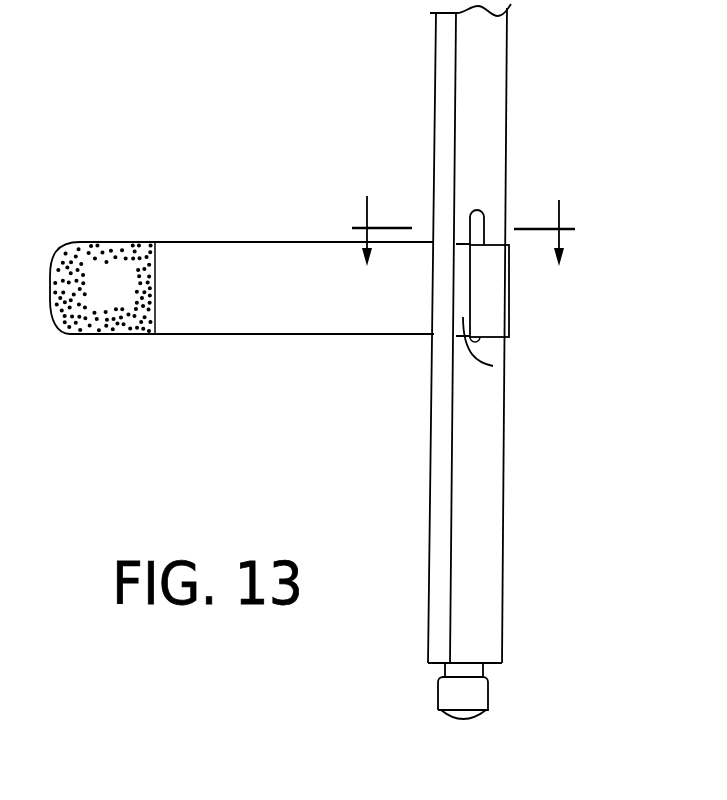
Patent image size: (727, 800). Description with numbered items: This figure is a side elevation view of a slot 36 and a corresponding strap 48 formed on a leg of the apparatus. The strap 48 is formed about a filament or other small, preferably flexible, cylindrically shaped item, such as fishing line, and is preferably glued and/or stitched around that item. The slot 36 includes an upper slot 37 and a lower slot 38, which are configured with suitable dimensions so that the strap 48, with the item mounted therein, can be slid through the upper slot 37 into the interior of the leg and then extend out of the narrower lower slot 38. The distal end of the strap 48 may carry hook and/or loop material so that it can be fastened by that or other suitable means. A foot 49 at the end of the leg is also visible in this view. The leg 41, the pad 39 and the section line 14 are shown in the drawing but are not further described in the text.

The section line 14- 14 is at (465, 223).
The cleaning tool assembly 36 is at (405, 362).
The retaining tab 37 is at (483, 215).
The clip 38 is at (493, 366).
The abrasive pad 39 is at (130, 304).
The shaft 41 is at (435, 157).
The arm 48 is at (235, 241).
The end cap 49 is at (480, 695).